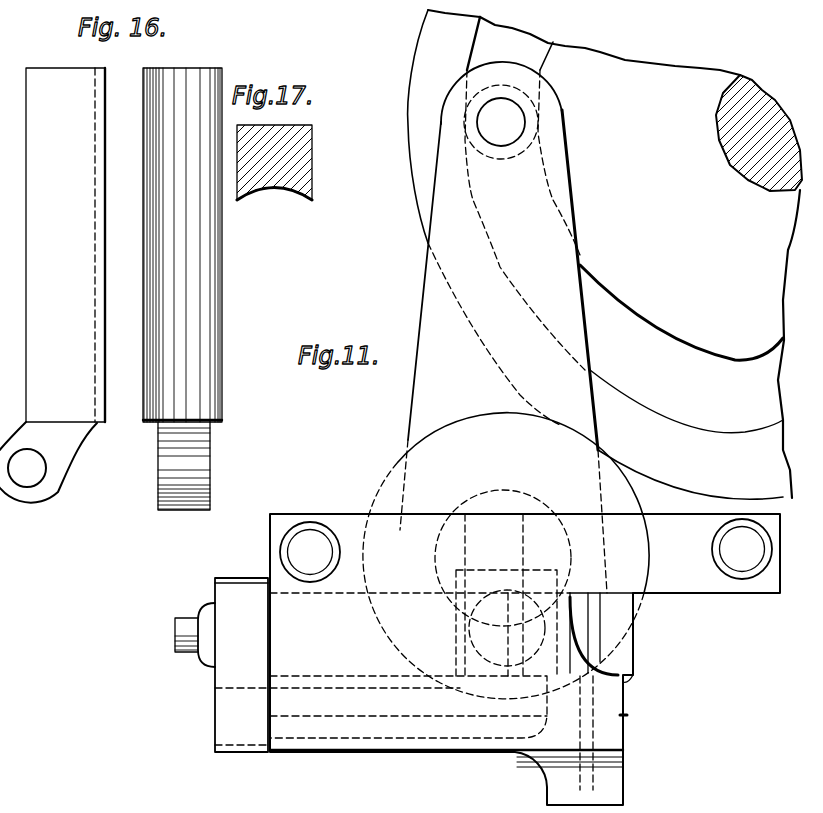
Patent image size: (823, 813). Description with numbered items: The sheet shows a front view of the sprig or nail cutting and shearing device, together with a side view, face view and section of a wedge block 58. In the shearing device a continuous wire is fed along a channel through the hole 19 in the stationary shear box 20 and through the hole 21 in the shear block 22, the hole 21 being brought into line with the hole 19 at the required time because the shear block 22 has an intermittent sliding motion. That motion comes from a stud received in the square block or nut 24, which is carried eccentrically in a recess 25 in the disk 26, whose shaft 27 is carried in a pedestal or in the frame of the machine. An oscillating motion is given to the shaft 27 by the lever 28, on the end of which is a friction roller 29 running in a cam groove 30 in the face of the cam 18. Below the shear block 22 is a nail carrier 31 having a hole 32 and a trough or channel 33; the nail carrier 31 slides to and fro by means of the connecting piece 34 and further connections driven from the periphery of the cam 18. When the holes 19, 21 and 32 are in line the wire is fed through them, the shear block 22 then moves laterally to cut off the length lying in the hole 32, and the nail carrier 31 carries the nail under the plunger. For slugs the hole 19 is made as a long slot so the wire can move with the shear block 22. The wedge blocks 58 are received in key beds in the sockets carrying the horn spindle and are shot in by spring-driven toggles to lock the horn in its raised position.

In FIG. 11, the cam 18 is at (625, 254).
In FIG. 11, the hole 19 is at (494, 594).
In FIG. 11, the shear box 20 is at (525, 659).
In FIG. 11, the hole 21 is at (510, 636).
In FIG. 11, the shear block 22 is at (615, 617).
In FIG. 11, the square block or nut 24 is at (463, 670).
In FIG. 11, the recess 25 is at (458, 664).
In FIG. 11, the disk 26 is at (506, 404).
In FIG. 11, the shaft 27 is at (515, 478).
In FIG. 11, the lever 28 is at (484, 217).
In FIG. 11, the friction roller 29 is at (501, 110).
In FIG. 11, the cam groove 30 is at (681, 382).
In FIG. 11, the nail carrier 31 is at (610, 778).
In FIG. 11, the hole 32 is at (588, 730).
In FIG. 11, the trough or channel 33 is at (337, 706).
In FIG. 11, the connecting piece 34 is at (221, 665).
In FIG. 16, the wedge block 58 is at (111, 289).
In FIG. 17, the wedge block 58 is at (283, 186).